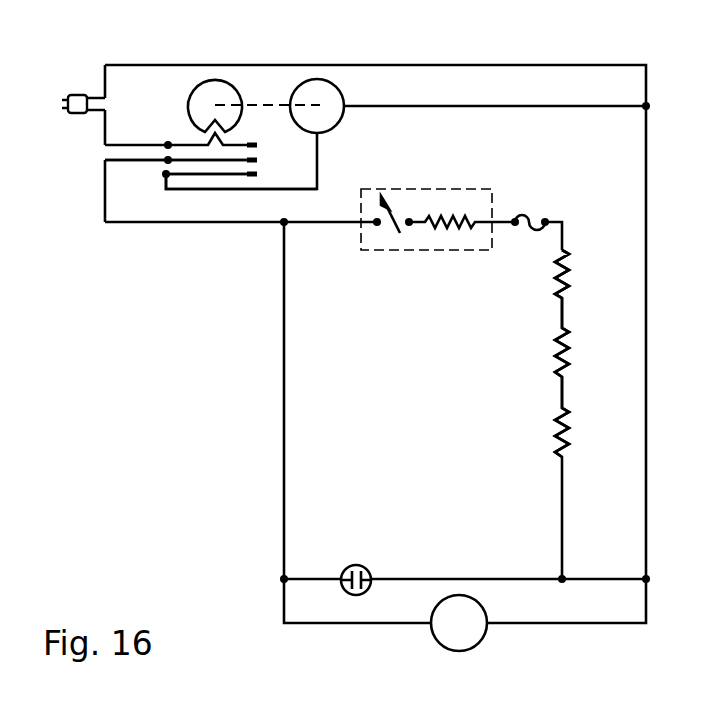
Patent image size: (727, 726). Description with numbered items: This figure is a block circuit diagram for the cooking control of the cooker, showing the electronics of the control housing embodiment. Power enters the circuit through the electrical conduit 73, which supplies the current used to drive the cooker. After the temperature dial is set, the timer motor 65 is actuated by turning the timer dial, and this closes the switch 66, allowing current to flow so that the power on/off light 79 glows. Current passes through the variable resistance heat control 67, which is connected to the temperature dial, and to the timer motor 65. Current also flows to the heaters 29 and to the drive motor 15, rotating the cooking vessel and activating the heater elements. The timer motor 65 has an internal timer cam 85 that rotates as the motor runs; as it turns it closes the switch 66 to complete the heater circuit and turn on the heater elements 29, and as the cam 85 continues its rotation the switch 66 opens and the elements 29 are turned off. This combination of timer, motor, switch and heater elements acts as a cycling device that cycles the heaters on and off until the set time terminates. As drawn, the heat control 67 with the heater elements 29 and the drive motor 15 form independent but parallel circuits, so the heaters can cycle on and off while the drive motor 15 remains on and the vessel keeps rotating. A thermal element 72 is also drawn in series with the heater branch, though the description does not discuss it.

The electrical conduit 73 is at (77, 95).
The timer cam 85 is at (205, 90).
The timer motor 65 is at (320, 90).
The switch 66 is at (166, 182).
The heat control 67 is at (380, 245).
The thermal cutout 72 is at (535, 215).
The heaters 29 is at (568, 350).
The power on/off light 79 is at (350, 565).
The drive motor 15 is at (447, 633).